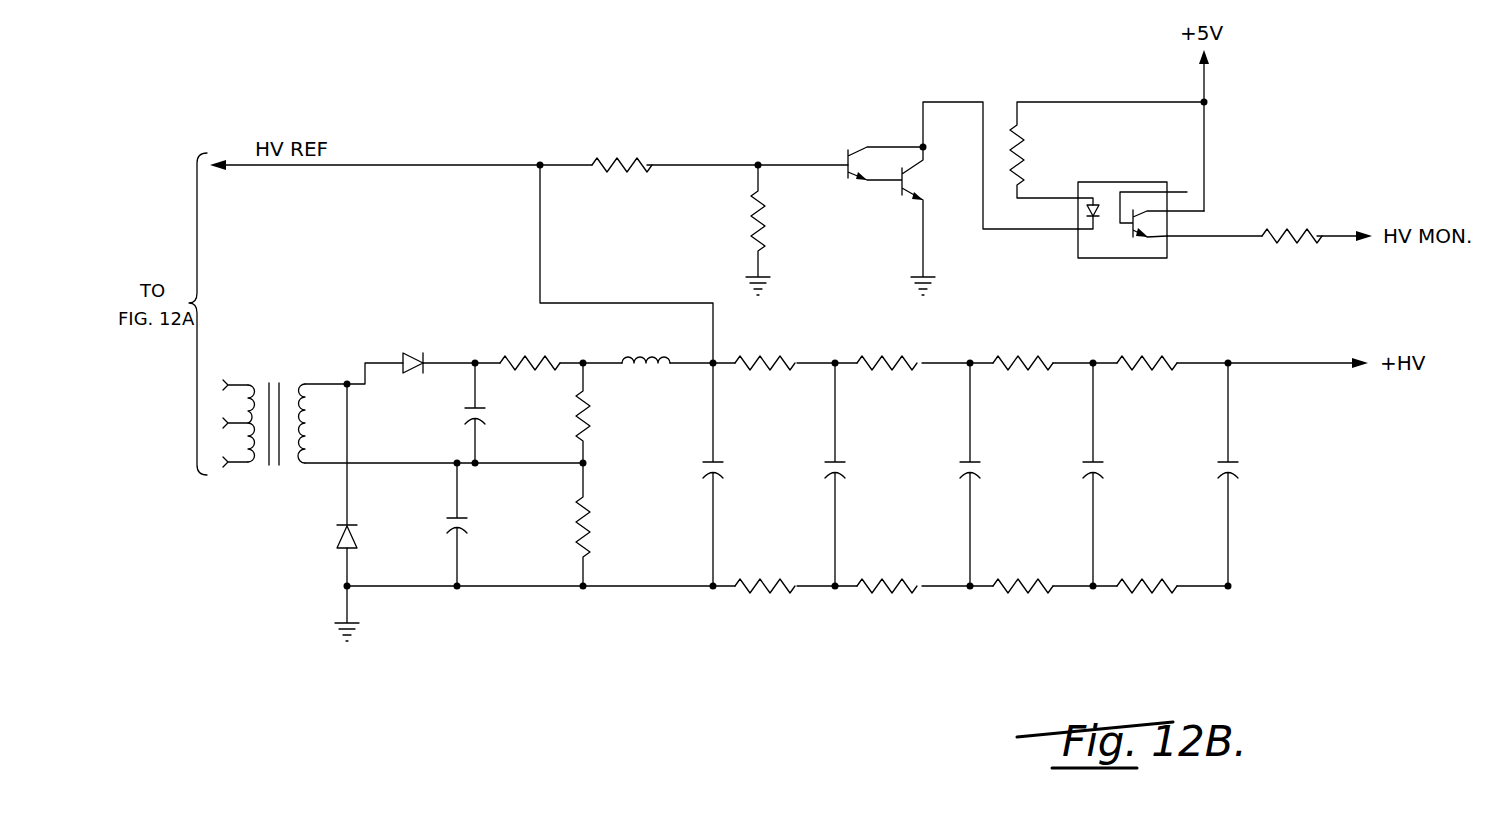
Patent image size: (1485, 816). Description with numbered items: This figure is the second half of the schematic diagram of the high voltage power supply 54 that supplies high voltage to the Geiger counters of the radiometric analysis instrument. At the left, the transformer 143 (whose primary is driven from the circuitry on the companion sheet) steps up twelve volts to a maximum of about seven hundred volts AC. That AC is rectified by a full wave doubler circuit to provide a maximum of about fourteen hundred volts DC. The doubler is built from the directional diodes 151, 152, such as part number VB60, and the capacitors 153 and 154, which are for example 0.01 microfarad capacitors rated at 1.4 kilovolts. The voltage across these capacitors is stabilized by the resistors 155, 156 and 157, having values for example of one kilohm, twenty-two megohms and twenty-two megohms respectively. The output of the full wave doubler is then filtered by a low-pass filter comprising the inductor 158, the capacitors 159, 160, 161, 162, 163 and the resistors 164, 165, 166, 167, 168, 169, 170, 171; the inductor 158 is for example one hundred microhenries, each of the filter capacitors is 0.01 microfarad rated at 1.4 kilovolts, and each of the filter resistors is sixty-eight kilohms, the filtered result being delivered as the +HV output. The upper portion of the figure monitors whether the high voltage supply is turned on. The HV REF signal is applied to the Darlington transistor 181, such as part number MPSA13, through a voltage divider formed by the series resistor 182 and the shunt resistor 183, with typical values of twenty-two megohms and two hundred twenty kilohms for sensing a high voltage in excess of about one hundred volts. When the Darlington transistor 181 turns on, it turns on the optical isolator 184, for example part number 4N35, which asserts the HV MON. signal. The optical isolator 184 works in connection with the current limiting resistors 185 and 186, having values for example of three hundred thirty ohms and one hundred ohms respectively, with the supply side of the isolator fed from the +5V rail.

The high voltage power supply 54 is at (244, 610).
The transformer 143 is at (273, 480).
The directional diode 151 is at (337, 540).
The directional diode 152 is at (418, 377).
The capacitor 153 is at (440, 522).
The capacitor 154 is at (492, 415).
The resistor 155 is at (525, 352).
The resistor 156 is at (590, 428).
The resistor 157 is at (572, 512).
The inductor 158 is at (645, 352).
The capacitor 159 is at (722, 458).
The capacitor 160 is at (843, 458).
The capacitor 161 is at (977, 458).
The capacitor 162 is at (1100, 458).
The capacitor 163 is at (1235, 458).
The resistor 164 is at (768, 380).
The resistor 165 is at (893, 380).
The resistor 166 is at (1010, 380).
The resistor 167 is at (1152, 380).
The resistor 168 is at (765, 570).
The resistor 169 is at (887, 570).
The resistor 170 is at (1020, 570).
The resistor 171 is at (1143, 572).
The Darlington transistor 181 is at (874, 130).
The series resistor 182 is at (635, 150).
The shunt resistor 183 is at (770, 235).
The optical isolator 184 is at (1135, 257).
The current limiting resistor 185 is at (1030, 152).
The current limiting resistor 186 is at (1295, 247).